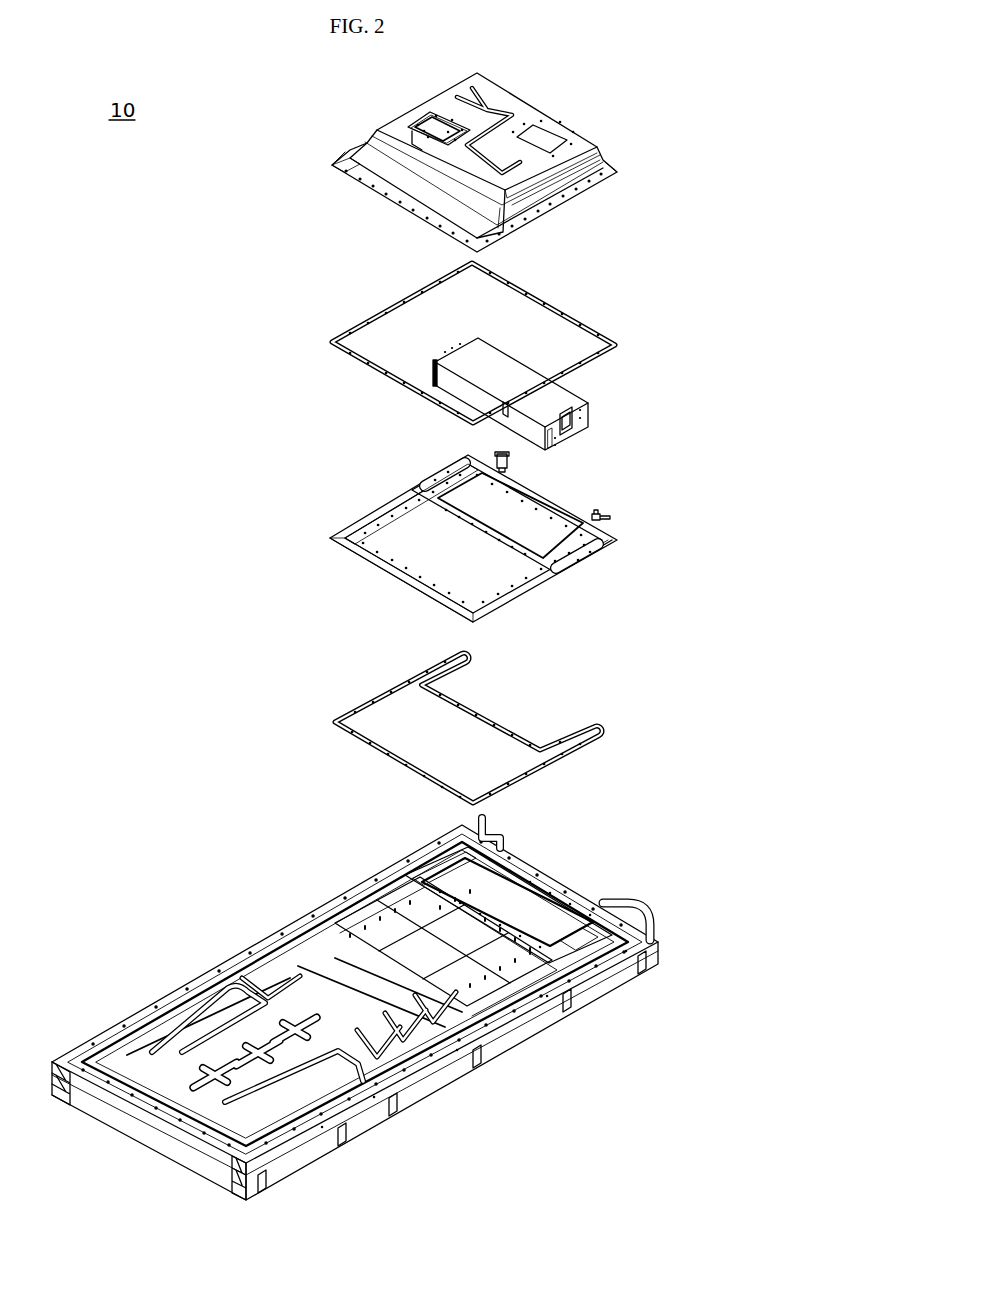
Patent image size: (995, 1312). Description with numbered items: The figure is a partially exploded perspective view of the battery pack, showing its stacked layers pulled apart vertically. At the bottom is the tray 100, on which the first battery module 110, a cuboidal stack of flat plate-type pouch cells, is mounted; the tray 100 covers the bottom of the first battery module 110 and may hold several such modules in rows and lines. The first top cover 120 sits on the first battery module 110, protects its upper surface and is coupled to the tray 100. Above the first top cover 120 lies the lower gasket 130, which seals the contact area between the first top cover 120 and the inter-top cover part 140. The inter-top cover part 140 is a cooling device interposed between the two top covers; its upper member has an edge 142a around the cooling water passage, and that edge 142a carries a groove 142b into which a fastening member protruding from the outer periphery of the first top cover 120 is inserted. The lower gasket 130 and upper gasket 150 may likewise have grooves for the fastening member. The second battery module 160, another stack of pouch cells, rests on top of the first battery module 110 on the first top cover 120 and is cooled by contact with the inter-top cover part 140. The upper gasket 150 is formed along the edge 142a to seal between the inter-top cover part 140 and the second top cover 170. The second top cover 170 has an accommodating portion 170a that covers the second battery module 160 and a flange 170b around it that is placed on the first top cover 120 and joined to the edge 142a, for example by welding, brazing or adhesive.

The tray 100 is at (585, 876).
The first battery module 110 is at (398, 940).
The first top cover 120 is at (593, 943).
The lower gasket 130 is at (587, 711).
The inter-top cover part 140 is at (585, 497).
The edge 142a is at (333, 545).
The groove 142b is at (346, 530).
The upper gasket 150 is at (585, 304).
The second battery module 160 is at (590, 394).
The second top cover 170 is at (586, 103).
The accommodating portion 170a is at (413, 108).
The flange 170b is at (331, 165).